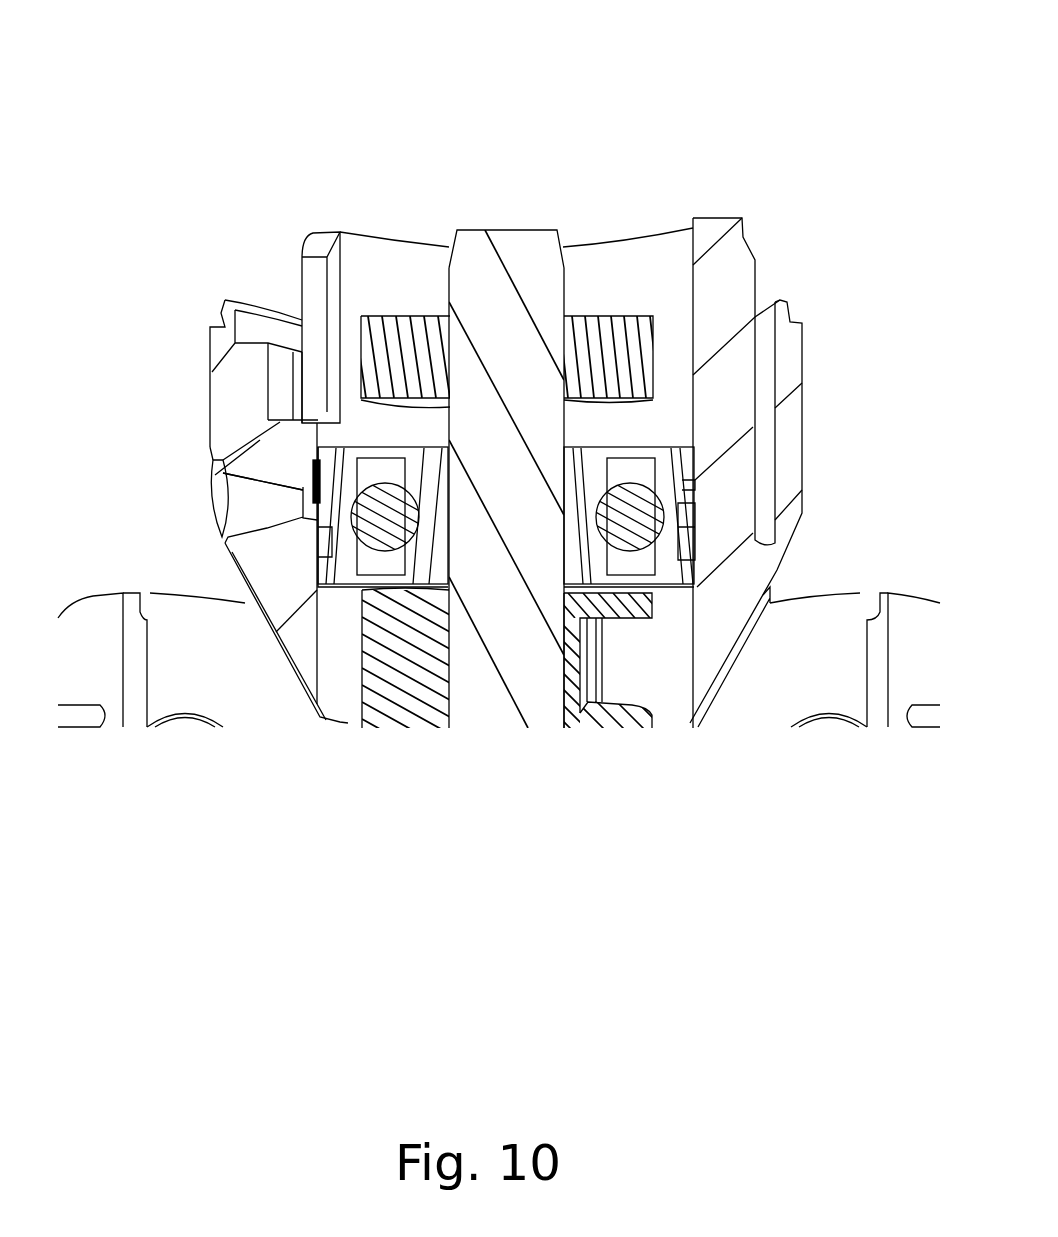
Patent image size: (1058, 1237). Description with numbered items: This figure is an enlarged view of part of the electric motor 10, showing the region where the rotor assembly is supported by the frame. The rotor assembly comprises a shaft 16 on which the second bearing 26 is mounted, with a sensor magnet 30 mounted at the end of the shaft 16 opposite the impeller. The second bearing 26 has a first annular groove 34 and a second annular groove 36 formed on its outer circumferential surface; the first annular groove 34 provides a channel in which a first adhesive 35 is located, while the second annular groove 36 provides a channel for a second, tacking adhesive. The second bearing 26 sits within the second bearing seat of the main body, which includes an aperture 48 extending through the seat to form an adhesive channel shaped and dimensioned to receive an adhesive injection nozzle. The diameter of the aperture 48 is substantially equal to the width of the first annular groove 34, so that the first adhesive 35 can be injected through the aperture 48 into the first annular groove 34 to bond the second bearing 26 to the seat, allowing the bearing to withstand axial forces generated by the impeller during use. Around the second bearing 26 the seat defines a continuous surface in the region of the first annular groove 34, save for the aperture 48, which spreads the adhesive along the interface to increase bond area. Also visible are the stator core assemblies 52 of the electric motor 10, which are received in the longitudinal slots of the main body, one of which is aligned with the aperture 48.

The electric motor 10 is at (300, 108).
The shaft 16 is at (528, 272).
The second bearing 26 is at (670, 477).
The sensor magnet 30 is at (403, 340).
The first annular groove 34 is at (315, 485).
The first adhesive 35 is at (315, 474).
The second annular groove 36 is at (690, 538).
The aperture 48 is at (280, 518).
The stator core assemblies 52 is at (210, 755).